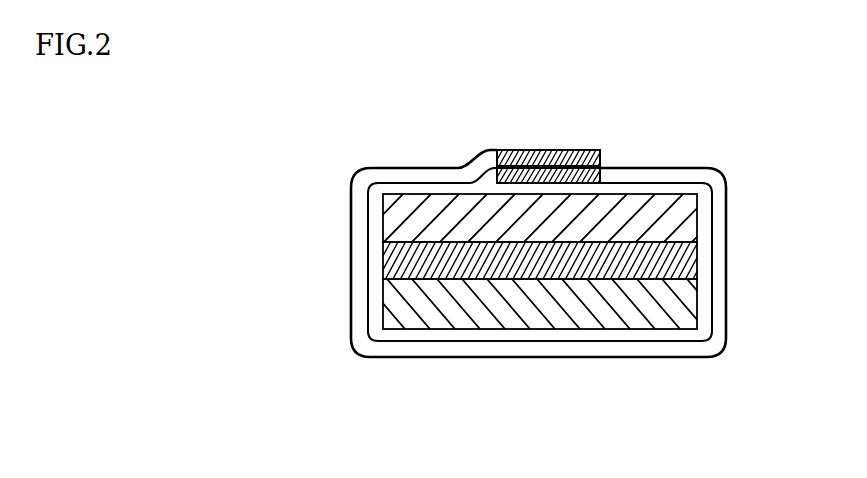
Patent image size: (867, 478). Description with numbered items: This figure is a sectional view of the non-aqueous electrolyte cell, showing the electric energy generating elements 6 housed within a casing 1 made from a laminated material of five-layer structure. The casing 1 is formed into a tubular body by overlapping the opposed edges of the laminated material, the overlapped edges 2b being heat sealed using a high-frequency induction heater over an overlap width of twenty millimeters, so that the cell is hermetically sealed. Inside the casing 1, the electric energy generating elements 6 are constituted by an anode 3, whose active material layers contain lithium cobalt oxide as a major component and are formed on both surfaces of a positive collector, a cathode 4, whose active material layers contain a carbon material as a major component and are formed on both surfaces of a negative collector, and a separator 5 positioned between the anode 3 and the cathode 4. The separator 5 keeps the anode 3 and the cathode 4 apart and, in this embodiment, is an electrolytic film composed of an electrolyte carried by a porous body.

The casing 1 is at (690, 348).
The overlapped edges 2b is at (547, 148).
The anode 3 is at (510, 226).
The cathode 4 is at (513, 308).
The separator 5 is at (440, 250).
The electric energy generating elements 6 is at (642, 194).